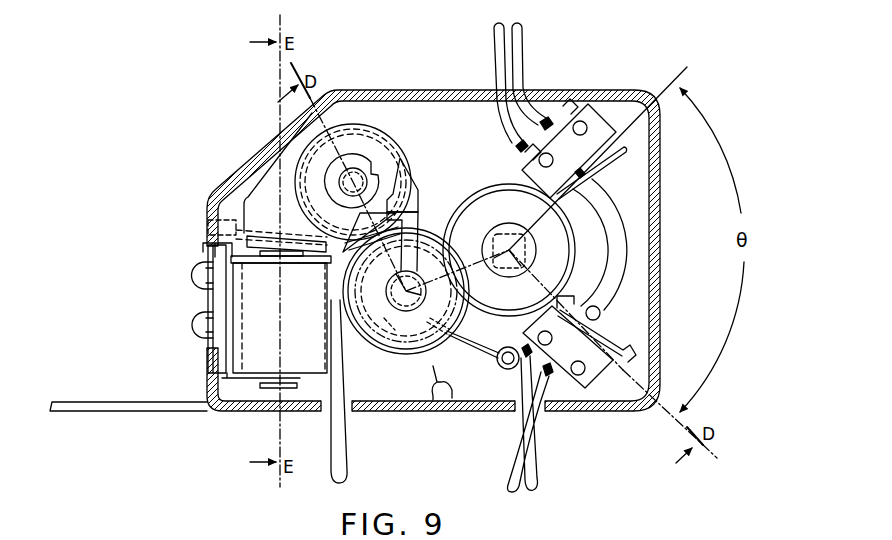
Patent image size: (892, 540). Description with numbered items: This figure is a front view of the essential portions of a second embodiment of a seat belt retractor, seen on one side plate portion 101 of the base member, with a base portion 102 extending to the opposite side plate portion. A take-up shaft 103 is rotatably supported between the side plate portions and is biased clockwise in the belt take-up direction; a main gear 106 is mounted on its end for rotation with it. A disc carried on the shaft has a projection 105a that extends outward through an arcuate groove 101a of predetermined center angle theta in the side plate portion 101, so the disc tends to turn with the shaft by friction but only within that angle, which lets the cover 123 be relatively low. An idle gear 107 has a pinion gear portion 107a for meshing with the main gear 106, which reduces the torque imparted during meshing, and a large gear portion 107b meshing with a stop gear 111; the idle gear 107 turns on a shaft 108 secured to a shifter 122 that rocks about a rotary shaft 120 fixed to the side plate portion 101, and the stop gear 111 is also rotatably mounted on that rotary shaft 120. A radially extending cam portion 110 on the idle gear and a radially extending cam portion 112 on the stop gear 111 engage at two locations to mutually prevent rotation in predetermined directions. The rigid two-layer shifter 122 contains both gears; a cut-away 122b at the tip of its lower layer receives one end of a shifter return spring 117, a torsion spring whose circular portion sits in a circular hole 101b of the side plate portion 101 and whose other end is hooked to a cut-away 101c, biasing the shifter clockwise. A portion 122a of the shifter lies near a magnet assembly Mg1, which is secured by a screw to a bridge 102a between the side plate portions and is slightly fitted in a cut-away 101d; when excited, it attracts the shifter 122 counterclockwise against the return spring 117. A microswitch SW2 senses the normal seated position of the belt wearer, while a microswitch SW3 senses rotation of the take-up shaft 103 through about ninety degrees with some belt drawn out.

The side plate portion 101 is at (368, 389).
The arcuate groove 101a is at (624, 247).
The circular hole 101b is at (506, 369).
The cut-away 101c is at (430, 396).
The cut-away 101d is at (262, 396).
The base portion 102 is at (126, 415).
The bridge 102a is at (212, 293).
The magnet assembly Mg1 is at (250, 338).
The take-up shaft 103 is at (484, 237).
The projection 105a is at (600, 313).
The main gear 106 is at (473, 196).
The idle gear 107 is at (347, 329).
The pinion gear portion 107a is at (380, 322).
The large gear portion 107b is at (408, 343).
The shaft 108 is at (388, 288).
The cam portion 110 is at (412, 230).
The stop gear 111 is at (396, 196).
The cam portion 112 is at (398, 198).
The shifter return spring 117 is at (492, 357).
The rotary shaft 120 is at (344, 164).
The shifter 122 is at (260, 187).
The lever arm 122a is at (262, 233).
The cut-away 122b is at (448, 328).
The cover 123 is at (627, 90).
The microswitch SW2 is at (594, 385).
The microswitch SW3 is at (593, 117).